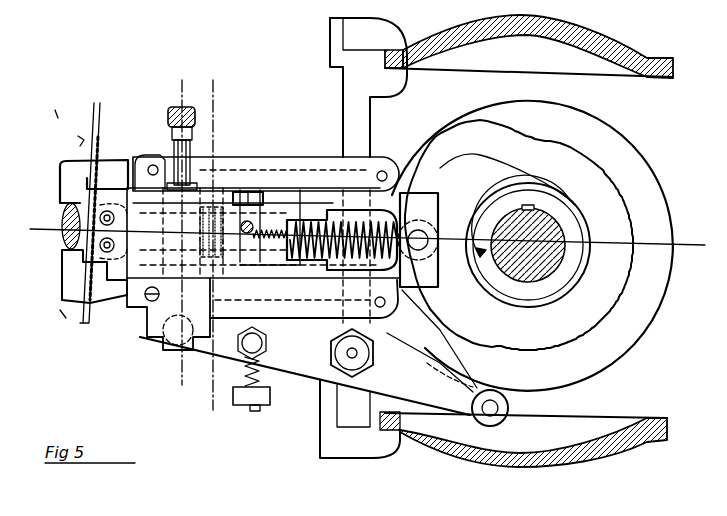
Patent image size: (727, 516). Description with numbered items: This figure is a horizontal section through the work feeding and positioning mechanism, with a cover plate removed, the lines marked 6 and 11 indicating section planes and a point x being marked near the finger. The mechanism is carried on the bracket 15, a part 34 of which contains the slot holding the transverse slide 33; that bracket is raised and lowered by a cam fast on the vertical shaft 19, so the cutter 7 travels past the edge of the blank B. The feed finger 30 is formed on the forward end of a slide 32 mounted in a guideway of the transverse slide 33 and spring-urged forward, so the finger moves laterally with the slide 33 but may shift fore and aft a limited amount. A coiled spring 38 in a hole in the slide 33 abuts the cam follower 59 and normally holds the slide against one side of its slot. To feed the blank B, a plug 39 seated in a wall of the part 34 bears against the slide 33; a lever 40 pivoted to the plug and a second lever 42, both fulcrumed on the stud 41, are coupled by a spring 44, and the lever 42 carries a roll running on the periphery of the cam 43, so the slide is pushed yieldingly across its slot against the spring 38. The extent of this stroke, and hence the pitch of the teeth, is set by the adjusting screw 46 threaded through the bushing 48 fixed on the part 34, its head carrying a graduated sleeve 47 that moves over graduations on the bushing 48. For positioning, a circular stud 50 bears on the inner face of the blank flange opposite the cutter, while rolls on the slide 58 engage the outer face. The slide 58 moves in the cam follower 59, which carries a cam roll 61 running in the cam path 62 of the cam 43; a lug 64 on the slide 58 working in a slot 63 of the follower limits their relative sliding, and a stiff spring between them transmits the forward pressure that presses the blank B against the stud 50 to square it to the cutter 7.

The section line 6-6 / axis 6 is at (366, 238).
The cutter 7 is at (178, 233).
The center line of pin 11 is at (213, 242).
The bracket 15 is at (360, 125).
The vertical shaft 19 is at (560, 230).
The feed finger 30 is at (70, 260).
The slide 32 is at (122, 168).
The transverse slide 33 is at (275, 217).
The part of the bracket 34 is at (300, 167).
The coiled spring 38 is at (223, 203).
The plug 39 is at (163, 317).
The lever 40 is at (243, 352).
The stud 41 is at (352, 353).
The lever 42 is at (471, 408).
The cam 43 is at (585, 365).
The spring 44 is at (250, 397).
The adjusting screw 46 is at (197, 124).
The graduated sleeve 47 is at (172, 122).
The bushing 48 is at (172, 150).
The circular stud 50 is at (72, 205).
The slide 58 is at (145, 255).
The cam follower 59 is at (310, 207).
The cam roll 61 is at (421, 218).
The cam path 62 is at (553, 143).
The slot 63 is at (253, 193).
The lug 64 is at (257, 197).
The blank B is at (77, 206).
The reference point x is at (72, 310).